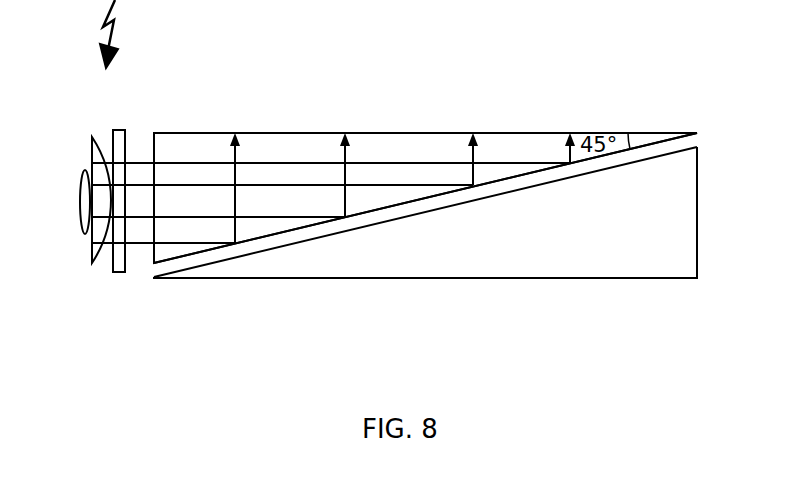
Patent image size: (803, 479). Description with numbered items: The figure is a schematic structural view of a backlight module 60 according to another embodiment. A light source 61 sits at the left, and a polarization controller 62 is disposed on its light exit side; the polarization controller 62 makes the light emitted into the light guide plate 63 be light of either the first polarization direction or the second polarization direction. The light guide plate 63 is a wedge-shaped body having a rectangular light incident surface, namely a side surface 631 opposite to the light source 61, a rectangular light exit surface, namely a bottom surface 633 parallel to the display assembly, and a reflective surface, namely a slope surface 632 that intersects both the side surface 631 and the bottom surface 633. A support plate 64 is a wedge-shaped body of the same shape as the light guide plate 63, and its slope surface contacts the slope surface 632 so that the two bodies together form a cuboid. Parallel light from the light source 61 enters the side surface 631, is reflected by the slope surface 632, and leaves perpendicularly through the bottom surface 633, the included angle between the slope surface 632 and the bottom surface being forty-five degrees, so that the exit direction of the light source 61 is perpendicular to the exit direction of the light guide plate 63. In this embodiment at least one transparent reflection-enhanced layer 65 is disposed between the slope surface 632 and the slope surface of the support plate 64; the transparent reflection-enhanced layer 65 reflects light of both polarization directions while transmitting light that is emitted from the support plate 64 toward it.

The backlight module 60 is at (129, 34).
The light source 61 is at (86, 241).
The polarization controller 62 is at (120, 257).
The light guide plate 63 is at (405, 143).
The side surface 631 is at (152, 147).
The slope surface 632 is at (185, 258).
The bottom surface 633 is at (305, 133).
The support plate 64 is at (460, 253).
The transparent reflection-enhanced layer 65 is at (687, 143).